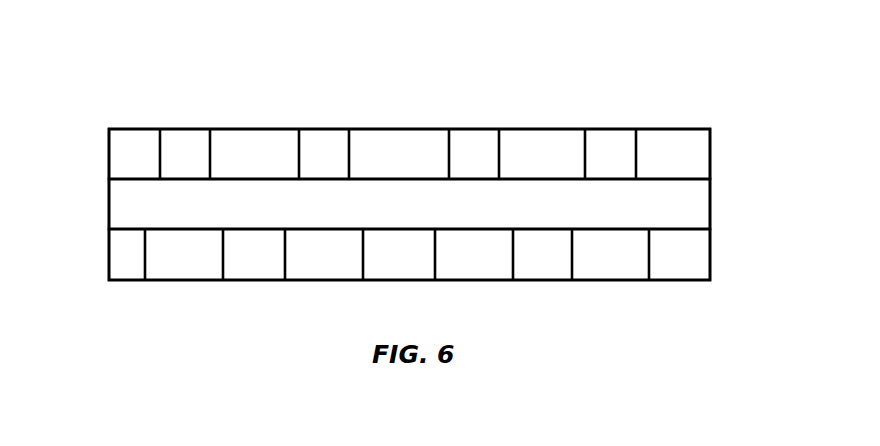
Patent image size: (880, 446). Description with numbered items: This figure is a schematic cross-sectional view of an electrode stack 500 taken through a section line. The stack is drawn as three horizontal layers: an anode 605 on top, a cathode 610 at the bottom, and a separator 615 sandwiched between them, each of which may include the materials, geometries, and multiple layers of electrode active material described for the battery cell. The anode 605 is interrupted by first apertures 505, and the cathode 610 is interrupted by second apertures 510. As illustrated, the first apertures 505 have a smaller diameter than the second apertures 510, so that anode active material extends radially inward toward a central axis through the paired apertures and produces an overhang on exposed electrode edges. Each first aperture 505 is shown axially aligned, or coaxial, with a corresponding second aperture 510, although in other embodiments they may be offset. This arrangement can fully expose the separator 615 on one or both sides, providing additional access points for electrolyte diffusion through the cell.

The electrode stack 500 is at (80, 60).
The first apertures 505 is at (586, 148).
The second apertures 510 is at (573, 260).
The anode 605 is at (710, 150).
The separator 615 is at (710, 207).
The cathode 610 is at (710, 263).